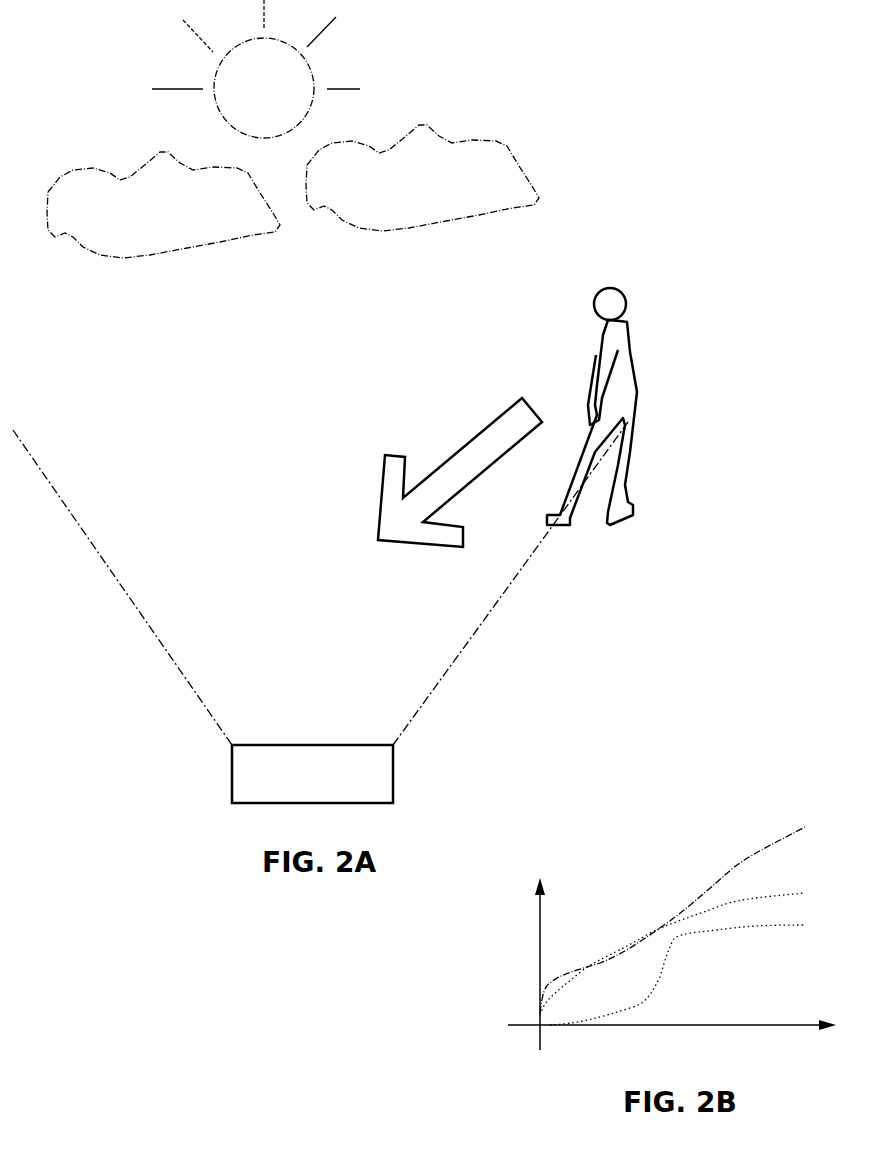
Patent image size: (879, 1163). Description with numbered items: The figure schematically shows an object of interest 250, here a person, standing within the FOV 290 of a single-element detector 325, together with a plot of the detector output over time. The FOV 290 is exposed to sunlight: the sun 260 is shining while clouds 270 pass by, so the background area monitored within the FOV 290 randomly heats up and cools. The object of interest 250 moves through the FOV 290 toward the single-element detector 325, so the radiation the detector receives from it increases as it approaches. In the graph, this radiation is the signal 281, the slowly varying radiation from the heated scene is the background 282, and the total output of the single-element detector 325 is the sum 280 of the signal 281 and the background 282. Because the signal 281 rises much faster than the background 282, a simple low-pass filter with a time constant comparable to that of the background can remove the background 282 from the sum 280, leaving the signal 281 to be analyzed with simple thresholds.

In FIG. 2A, the object of interest 250 is at (621, 318).
In FIG. 2A, the sun 260 is at (281, 100).
In FIG. 2A, the clouds 270 is at (181, 215).
In FIG. 2A, the FOV 290 is at (320, 583).
In FIG. 2A, the single-element detector 325 is at (312, 774).
In FIG. 2B, the sum 280 is at (672, 917).
In FIG. 2B, the signal 281 is at (672, 944).
In FIG. 2B, the background 282 is at (678, 975).